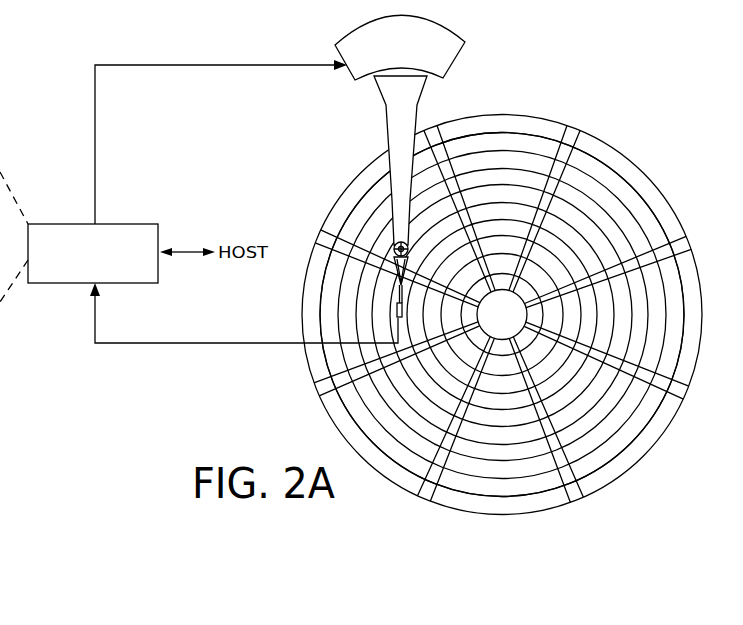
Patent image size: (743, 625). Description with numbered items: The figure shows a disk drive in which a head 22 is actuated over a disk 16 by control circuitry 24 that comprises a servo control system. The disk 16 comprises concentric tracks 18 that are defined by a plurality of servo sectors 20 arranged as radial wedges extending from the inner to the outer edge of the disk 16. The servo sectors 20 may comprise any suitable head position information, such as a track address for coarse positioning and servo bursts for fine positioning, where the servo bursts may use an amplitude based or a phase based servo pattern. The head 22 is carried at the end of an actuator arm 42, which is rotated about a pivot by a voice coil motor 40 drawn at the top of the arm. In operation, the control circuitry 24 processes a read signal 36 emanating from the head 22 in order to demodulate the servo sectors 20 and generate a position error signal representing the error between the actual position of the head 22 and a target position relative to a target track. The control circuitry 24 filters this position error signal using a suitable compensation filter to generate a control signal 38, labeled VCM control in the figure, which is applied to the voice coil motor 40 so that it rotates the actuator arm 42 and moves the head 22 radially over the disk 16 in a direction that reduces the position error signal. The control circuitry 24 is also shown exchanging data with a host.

The disk 16 is at (641, 160).
The tracks 18 is at (505, 145).
The servo sectors 20 is at (506, 320).
The head 22 is at (385, 324).
The control circuitry 24 is at (130, 223).
The read signal 36 is at (210, 345).
The control signal 38 is at (95, 130).
The voice coil motor 40 is at (347, 78).
The actuator arm 42 is at (386, 128).